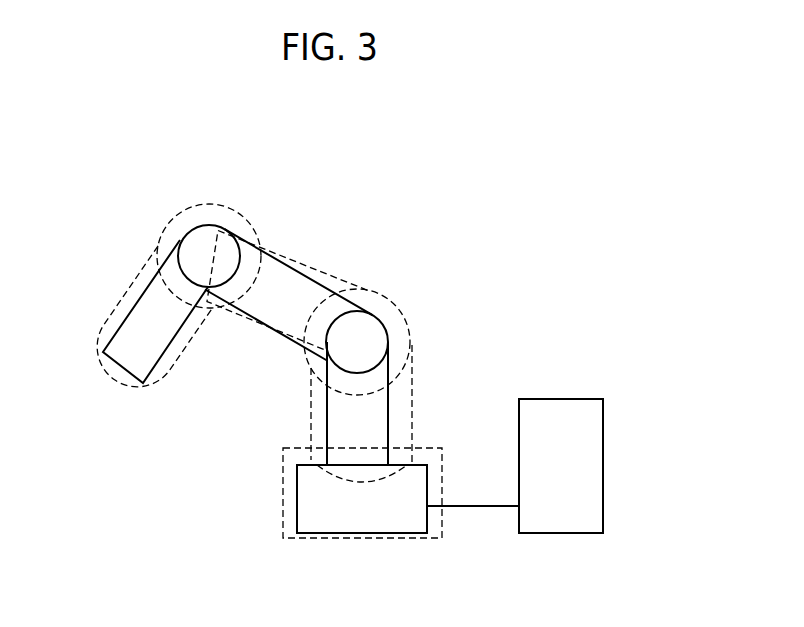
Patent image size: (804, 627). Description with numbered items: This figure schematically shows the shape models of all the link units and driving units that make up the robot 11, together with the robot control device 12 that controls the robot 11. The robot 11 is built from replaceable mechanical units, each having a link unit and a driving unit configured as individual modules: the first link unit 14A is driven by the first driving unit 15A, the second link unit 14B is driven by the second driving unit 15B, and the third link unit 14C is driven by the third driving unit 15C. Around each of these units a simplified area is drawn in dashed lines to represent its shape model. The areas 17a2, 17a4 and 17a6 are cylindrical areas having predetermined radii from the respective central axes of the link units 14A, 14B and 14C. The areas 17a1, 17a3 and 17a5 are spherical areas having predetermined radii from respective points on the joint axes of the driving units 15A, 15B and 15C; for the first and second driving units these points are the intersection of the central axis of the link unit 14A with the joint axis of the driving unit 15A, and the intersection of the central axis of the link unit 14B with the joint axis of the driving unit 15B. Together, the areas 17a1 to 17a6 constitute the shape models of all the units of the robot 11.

The robot 11 is at (262, 325).
The robot control device 12 is at (603, 428).
The first link unit 14A is at (337, 417).
The second link unit 14B is at (288, 266).
The third link unit 14C is at (128, 350).
The first driving unit 15A is at (320, 517).
The second driving unit 15B is at (388, 329).
The third driving unit 15C is at (212, 237).
The area 17a1 is at (281, 489).
The area 17a2 is at (413, 380).
The area 17a3 is at (392, 300).
The area 17a4 is at (336, 277).
The area 17a5 is at (162, 232).
The area 17a6 is at (120, 303).